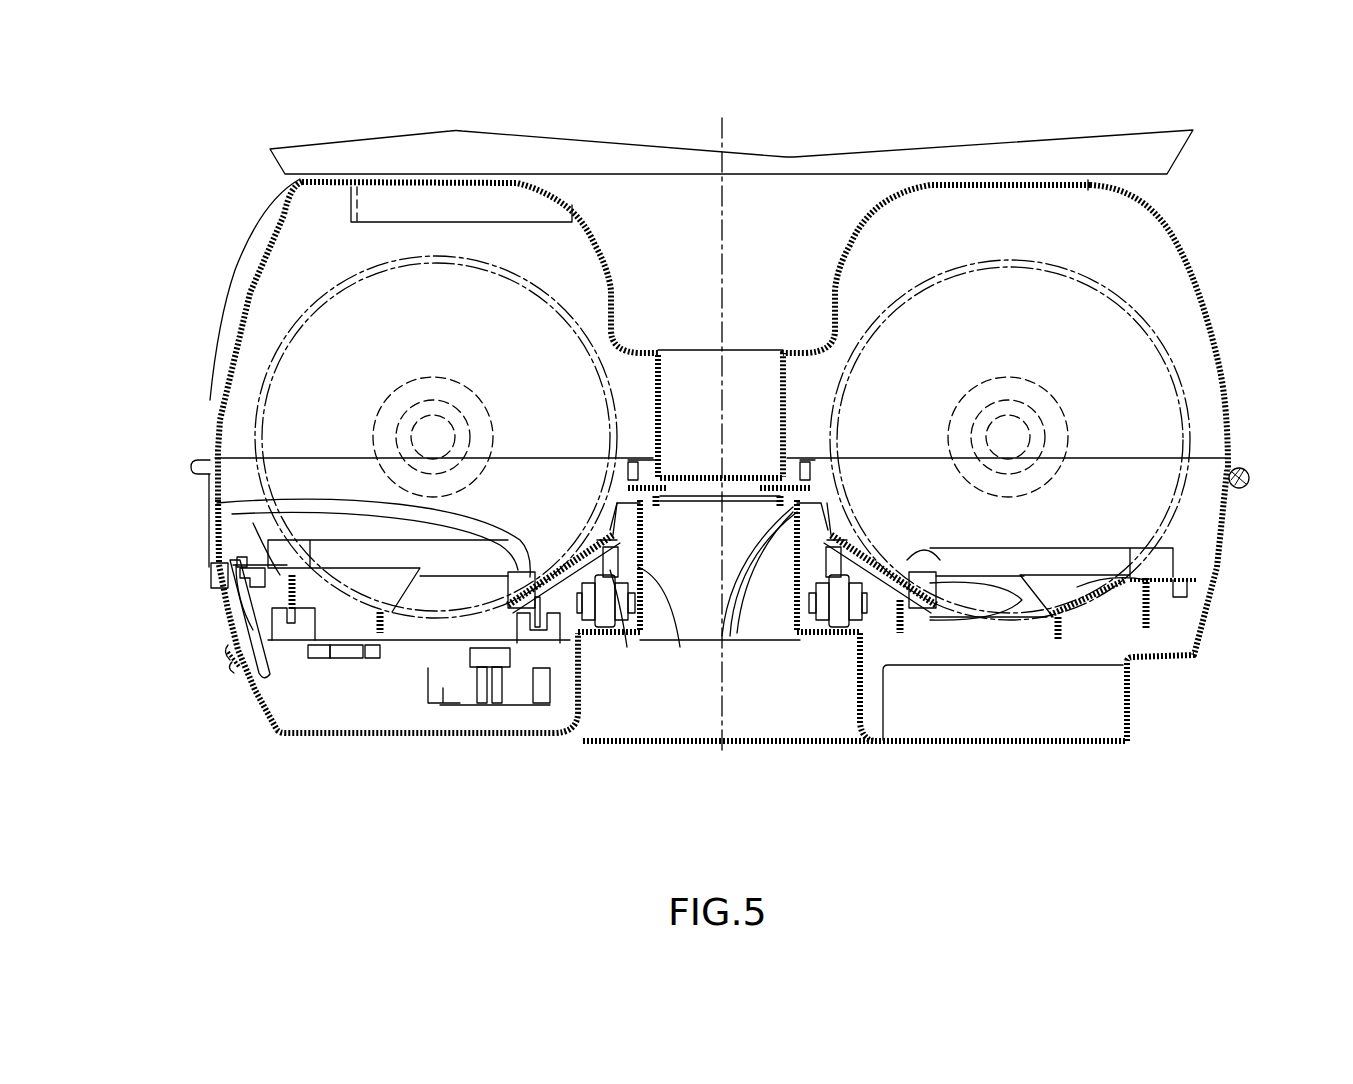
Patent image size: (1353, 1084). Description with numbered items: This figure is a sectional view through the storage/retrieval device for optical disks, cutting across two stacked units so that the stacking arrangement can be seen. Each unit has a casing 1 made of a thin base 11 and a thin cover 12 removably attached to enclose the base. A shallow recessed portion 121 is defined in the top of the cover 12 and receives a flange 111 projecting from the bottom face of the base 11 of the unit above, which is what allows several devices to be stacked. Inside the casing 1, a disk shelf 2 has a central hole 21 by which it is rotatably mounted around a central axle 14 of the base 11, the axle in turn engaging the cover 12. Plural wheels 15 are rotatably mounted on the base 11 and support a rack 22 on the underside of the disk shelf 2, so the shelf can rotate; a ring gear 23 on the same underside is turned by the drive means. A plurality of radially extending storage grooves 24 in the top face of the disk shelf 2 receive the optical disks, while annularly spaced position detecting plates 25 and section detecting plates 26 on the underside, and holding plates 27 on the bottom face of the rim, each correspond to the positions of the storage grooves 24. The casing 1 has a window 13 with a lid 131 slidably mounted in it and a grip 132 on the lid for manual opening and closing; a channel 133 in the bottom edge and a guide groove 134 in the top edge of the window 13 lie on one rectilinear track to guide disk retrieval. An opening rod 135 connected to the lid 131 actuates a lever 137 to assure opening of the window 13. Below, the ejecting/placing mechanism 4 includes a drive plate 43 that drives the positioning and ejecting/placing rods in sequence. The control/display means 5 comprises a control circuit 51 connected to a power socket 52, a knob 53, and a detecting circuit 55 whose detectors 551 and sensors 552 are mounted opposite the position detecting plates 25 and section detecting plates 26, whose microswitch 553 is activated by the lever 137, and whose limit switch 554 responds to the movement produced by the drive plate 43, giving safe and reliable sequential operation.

The casing 1 is at (1203, 136).
The disk shelf 2 is at (1199, 578).
The ejecting/placing mechanism 4 is at (450, 714).
The control/display means 5 is at (1120, 735).
The thin base 11 is at (1232, 523).
The thin cover 12 is at (1230, 428).
The window 13 is at (207, 392).
The central axle 14 is at (757, 505).
The wheels 15 is at (640, 636).
The central hole 21 is at (797, 512).
The rack 22 is at (395, 627).
The ring gear 23 is at (388, 627).
The storage grooves 24 is at (217, 503).
The position detecting plates 25 is at (273, 730).
The section detecting plates 26 is at (537, 630).
The holding plates 27 is at (243, 575).
The drive plate 43 is at (497, 700).
The control circuit 51 is at (1053, 633).
The power socket 52 is at (1130, 713).
The knob 53 is at (230, 670).
The detecting circuit 55 is at (552, 647).
The flange 111 is at (800, 176).
The shallow recessed portion 121 is at (1090, 183).
The lid 131 is at (230, 345).
The grip 132 is at (253, 247).
The channel 133 is at (213, 550).
The guide groove 134 is at (373, 207).
The opening rod 135 is at (227, 633).
The lever 137 is at (305, 657).
The detectors 551 is at (260, 683).
The sensors 552 is at (607, 612).
The microswitch 553 is at (347, 653).
The limit switch 554 is at (482, 700).